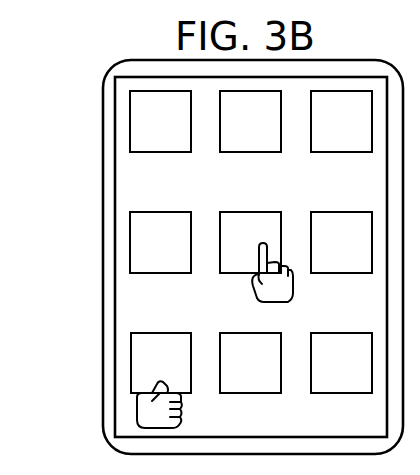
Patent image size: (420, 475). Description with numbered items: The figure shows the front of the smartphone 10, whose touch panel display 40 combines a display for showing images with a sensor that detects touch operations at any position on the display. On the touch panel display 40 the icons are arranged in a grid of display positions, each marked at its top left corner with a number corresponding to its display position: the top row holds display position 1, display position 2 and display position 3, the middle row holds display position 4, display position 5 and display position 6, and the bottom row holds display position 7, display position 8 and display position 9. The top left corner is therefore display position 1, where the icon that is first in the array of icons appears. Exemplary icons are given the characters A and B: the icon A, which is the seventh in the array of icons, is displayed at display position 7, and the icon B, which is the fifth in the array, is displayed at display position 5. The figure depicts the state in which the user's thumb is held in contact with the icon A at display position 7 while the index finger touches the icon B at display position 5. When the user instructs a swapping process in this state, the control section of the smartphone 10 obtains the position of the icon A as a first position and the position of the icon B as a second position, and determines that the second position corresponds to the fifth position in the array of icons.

The smartphone 10 is at (101, 118).
The touch panel display 40 is at (207, 257).
The display position 1 is at (160, 121).
The display position 2 is at (250, 121).
The display position 3 is at (341, 121).
The display position 4 is at (160, 242).
The display position 5 is at (250, 242).
The display position 6 is at (341, 242).
The display position 7 is at (161, 363).
The display position 8 is at (250, 363).
The display position 9 is at (341, 363).